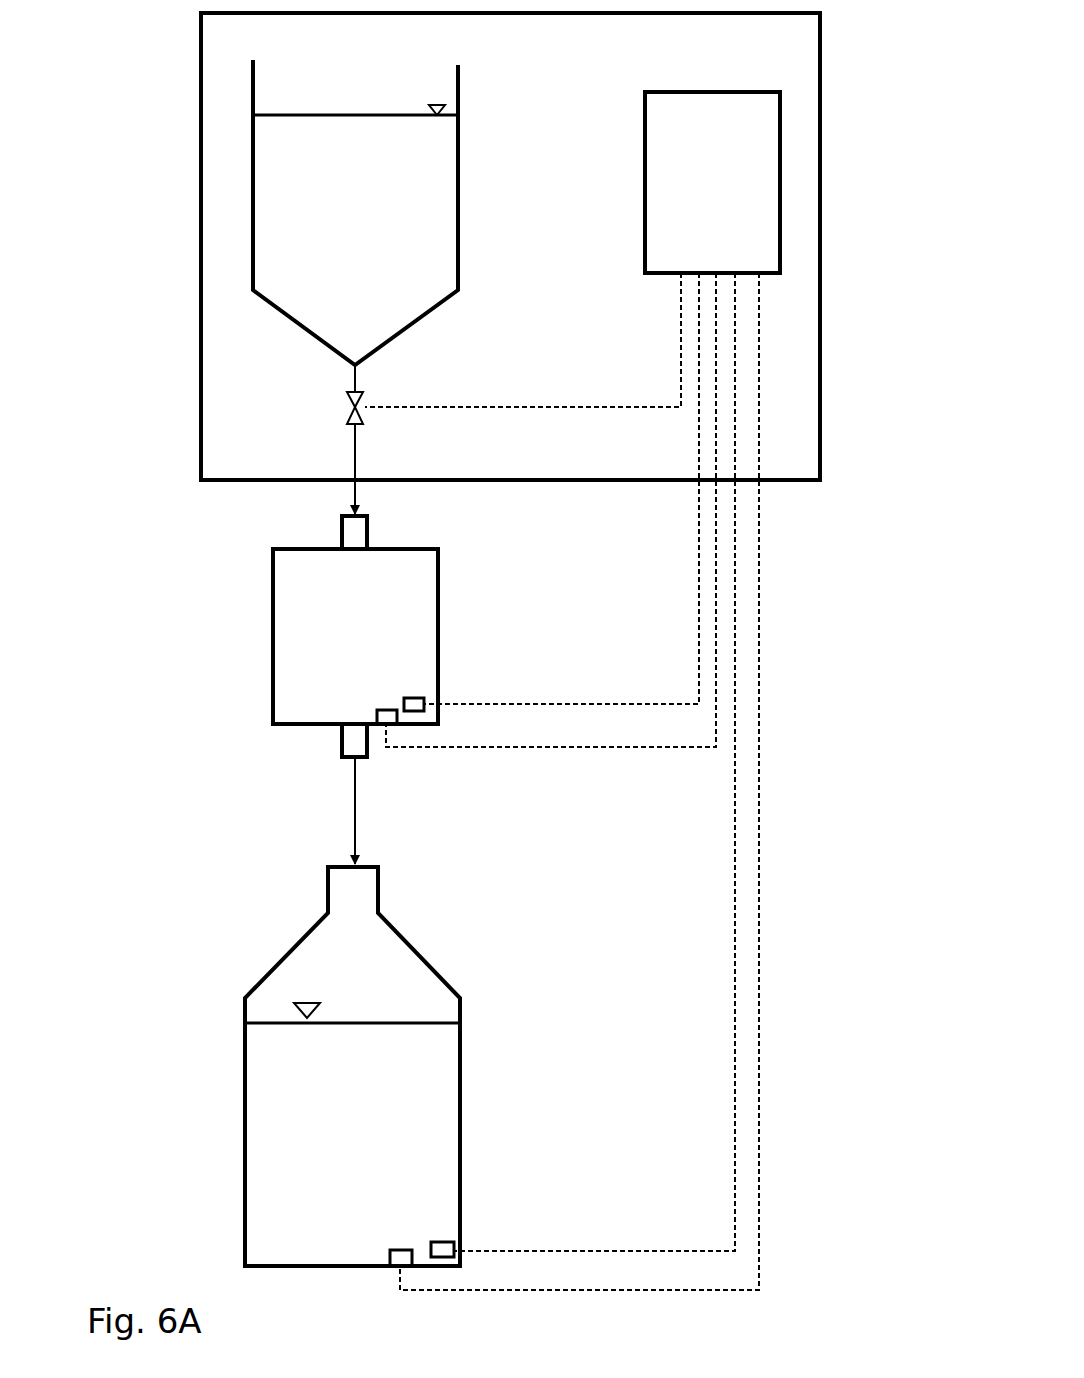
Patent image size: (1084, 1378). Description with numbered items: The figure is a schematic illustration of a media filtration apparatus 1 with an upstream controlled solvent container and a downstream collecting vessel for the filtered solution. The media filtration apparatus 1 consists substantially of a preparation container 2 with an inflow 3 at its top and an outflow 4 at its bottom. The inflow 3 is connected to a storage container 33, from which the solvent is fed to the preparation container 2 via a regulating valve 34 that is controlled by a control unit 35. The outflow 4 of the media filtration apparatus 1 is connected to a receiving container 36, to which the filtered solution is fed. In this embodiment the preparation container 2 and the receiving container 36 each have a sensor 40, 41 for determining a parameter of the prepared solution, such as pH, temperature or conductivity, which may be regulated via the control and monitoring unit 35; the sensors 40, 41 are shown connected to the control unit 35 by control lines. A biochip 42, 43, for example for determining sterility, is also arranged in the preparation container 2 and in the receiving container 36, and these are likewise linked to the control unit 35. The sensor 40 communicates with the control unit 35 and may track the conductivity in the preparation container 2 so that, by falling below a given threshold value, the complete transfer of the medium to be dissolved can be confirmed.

The media filtration apparatus 1 is at (254, 628).
The preparation container 2 is at (410, 637).
The inflow 3 is at (355, 532).
The outflow 4 is at (355, 740).
The storage container 33 is at (305, 213).
The regulating valve 34 is at (345, 400).
The control unit 35 is at (698, 160).
The receiving container 36 is at (430, 1080).
The sensor 40 is at (415, 705).
The sensor 41 is at (450, 1245).
The biochip 42 is at (378, 715).
The biochip 43 is at (390, 1258).